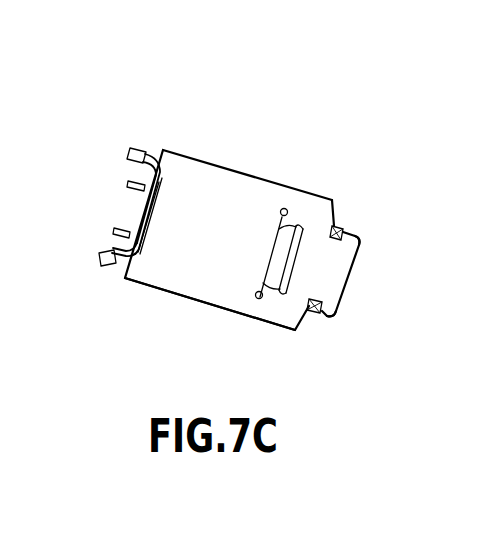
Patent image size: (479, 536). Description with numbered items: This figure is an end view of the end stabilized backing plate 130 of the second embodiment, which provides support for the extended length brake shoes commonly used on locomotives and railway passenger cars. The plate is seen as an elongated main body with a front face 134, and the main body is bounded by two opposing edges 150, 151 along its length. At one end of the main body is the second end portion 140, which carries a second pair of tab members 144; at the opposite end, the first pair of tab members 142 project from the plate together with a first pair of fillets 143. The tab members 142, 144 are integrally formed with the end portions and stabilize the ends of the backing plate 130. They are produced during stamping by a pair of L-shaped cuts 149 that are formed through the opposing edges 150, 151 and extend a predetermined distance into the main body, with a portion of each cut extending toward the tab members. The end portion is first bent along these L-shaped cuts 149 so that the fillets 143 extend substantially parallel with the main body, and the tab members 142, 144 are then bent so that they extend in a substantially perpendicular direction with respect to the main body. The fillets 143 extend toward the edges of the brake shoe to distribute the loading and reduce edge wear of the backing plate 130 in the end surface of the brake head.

The end stabilized backing plate 130 is at (321, 106).
The front face 134 is at (187, 178).
The second end portion 140 is at (338, 277).
The first pair of tab members 142 is at (130, 167).
The first pair of fillets 143 is at (137, 147).
The second pair of tab members 144 is at (350, 233).
The second pair of L-shaped cuts 149 is at (339, 226).
The opposing edge of main body portion 150 is at (272, 180).
The opposing edge of main body portion 151 is at (208, 303).